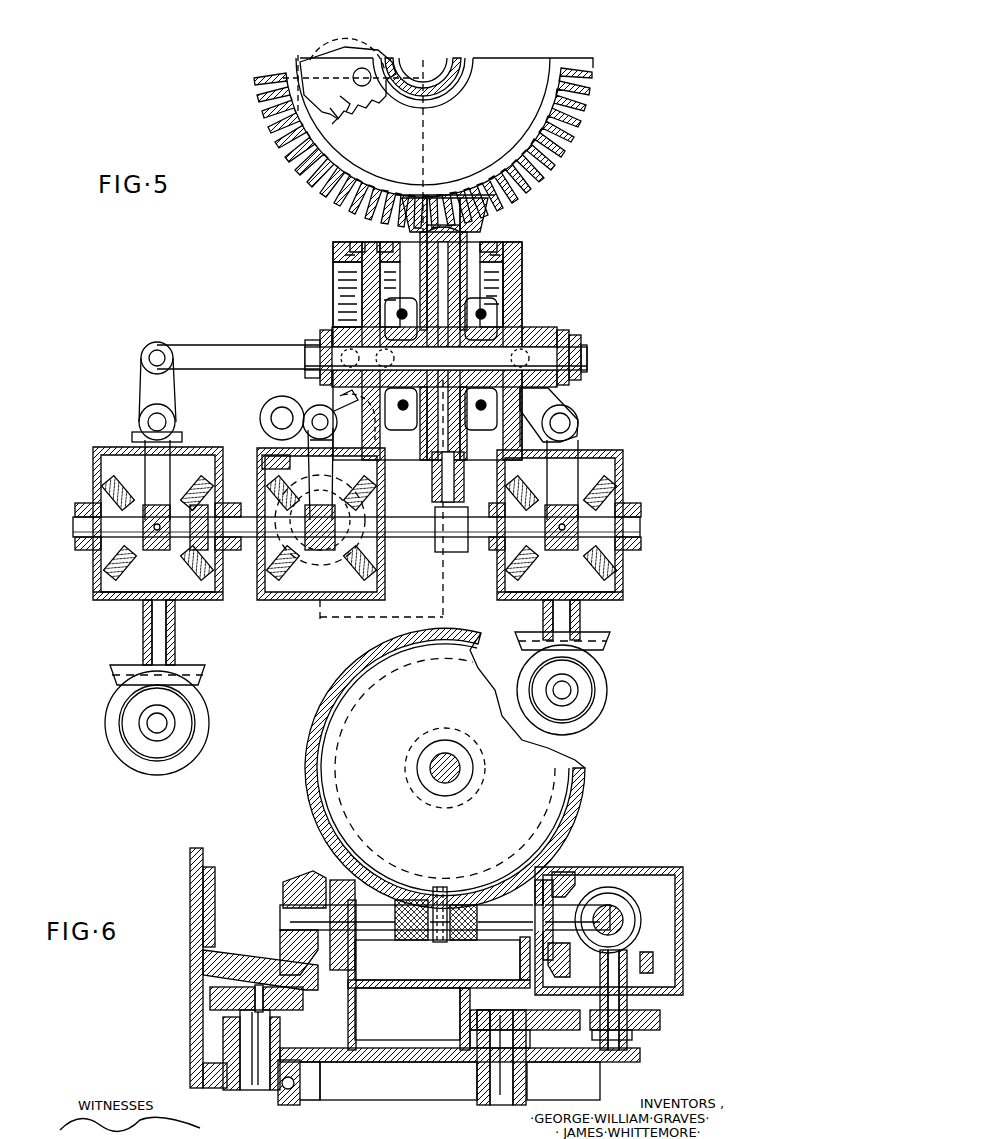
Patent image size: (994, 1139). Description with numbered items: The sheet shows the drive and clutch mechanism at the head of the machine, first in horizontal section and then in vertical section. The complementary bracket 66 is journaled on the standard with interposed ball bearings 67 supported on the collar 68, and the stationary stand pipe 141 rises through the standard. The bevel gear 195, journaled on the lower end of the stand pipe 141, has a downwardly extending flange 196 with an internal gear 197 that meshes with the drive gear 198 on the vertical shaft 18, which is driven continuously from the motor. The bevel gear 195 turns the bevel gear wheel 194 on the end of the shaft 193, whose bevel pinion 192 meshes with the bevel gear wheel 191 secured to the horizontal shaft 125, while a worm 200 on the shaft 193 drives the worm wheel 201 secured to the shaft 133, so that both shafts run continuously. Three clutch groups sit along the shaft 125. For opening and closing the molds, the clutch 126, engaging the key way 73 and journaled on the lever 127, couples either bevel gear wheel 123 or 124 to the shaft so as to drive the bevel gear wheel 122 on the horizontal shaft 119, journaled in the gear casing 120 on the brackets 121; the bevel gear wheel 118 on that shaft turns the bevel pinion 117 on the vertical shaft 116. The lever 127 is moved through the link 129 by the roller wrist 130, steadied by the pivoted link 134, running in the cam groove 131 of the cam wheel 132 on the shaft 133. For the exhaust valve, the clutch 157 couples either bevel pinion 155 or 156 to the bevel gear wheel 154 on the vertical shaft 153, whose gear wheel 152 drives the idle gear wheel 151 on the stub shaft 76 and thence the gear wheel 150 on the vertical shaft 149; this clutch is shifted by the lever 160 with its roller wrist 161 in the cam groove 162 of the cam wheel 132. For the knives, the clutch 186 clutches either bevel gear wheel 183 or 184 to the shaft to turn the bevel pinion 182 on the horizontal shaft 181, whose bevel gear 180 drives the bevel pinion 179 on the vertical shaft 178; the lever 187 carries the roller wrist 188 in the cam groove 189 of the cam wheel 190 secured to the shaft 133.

In FIG. 5, the vertical shaft 18 is at (353, 78).
In FIG. 6, the vertical shaft 18 is at (235, 1030).
In FIG. 6, the complementary bracket 66 is at (460, 1074).
In FIG. 6, the ball bearings 67 is at (318, 1097).
In FIG. 6, the collar 68 is at (282, 1097).
In FIG. 5, the key way 73 is at (130, 488).
In FIG. 6, the key way 73 is at (625, 908).
In FIG. 6, the stub shaft 76 is at (553, 1020).
In FIG. 5, the vertical shaft 116 is at (153, 720).
In FIG. 5, the bevel pinion 117 is at (200, 715).
In FIG. 5, the bevel gear wheel 118 is at (183, 672).
In FIG. 5, the horizontal shaft 119 is at (157, 620).
In FIG. 5, the gear casing 120 is at (100, 594).
In FIG. 6, the gear casing 120 is at (685, 897).
In FIG. 6, the brackets 121 is at (357, 1016).
In FIG. 5, the bevel gear wheel 122 is at (115, 567).
In FIG. 5, the bevel gear wheel 123 is at (95, 472).
In FIG. 5, the bevel gear wheel 124 is at (197, 490).
In FIG. 5, the shaft 125 is at (80, 525).
In FIG. 6, the shaft 125 is at (612, 918).
In FIG. 5, the clutch 126 is at (157, 517).
In FIG. 5, the lever 127 is at (150, 378).
In FIG. 5, the link 129 is at (227, 352).
In FIG. 5, the roller wrist 130 is at (355, 327).
In FIG. 6, the roller wrist 130 is at (445, 885).
In FIG. 5, the cam groove 131 is at (390, 243).
In FIG. 5, the cam wheel 132 is at (372, 295).
In FIG. 5, the shaft 133 is at (447, 357).
In FIG. 6, the shaft 133 is at (447, 771).
In FIG. 5, the pivoted link 134 is at (350, 340).
In FIG. 5, the stand pipe 141 is at (465, 88).
In FIG. 6, the stand pipe 141 is at (200, 882).
In FIG. 6, the vertical shaft 149 is at (495, 1080).
In FIG. 5, the gear wheel 150 is at (268, 408).
In FIG. 6, the gear wheel 150 is at (485, 1023).
In FIG. 5, the idle gear wheel 151 is at (290, 448).
In FIG. 6, the idle gear wheel 151 is at (615, 1047).
In FIG. 6, the gear wheel 152 is at (655, 1020).
In FIG. 6, the vertical shaft 153 is at (585, 1031).
In FIG. 5, the bevel gear wheel 154 is at (328, 560).
In FIG. 6, the bevel gear wheel 154 is at (647, 962).
In FIG. 5, the bevel pinion 155 is at (305, 557).
In FIG. 5, the bevel pinion 156 is at (352, 565).
In FIG. 5, the clutch 157 is at (320, 545).
In FIG. 5, the lever 160 is at (327, 402).
In FIG. 6, the lever 160 is at (570, 890).
In FIG. 5, the roller wrist 161 is at (318, 345).
In FIG. 5, the cam groove 162 is at (357, 243).
In FIG. 5, the vertical shaft 178 is at (565, 690).
In FIG. 5, the bevel pinion 179 is at (605, 682).
In FIG. 5, the bevel gear 180 is at (592, 642).
In FIG. 5, the horizontal shaft 181 is at (580, 590).
In FIG. 5, the bevel pinion 182 is at (600, 572).
In FIG. 5, the bevel gear wheel 183 is at (627, 480).
In FIG. 5, the bevel gear wheel 184 is at (560, 517).
In FIG. 5, the clutch 186 is at (600, 498).
In FIG. 5, the lever 187 is at (548, 403).
In FIG. 5, the roller wrist 188 is at (547, 327).
In FIG. 5, the cam groove 189 is at (497, 245).
In FIG. 5, the cam wheel 190 is at (513, 272).
In FIG. 5, the bevel gear wheel 191 is at (398, 557).
In FIG. 5, the bevel pinion 192 is at (477, 552).
In FIG. 6, the bevel pinion 192 is at (545, 880).
In FIG. 5, the shaft 193 is at (585, 425).
In FIG. 6, the shaft 193 is at (370, 915).
In FIG. 5, the bevel gear wheel 194 is at (467, 203).
In FIG. 6, the bevel gear wheel 194 is at (300, 880).
In FIG. 5, the bevel gear 195 is at (578, 110).
In FIG. 6, the bevel gear 195 is at (280, 962).
In FIG. 5, the flange 196 is at (350, 138).
In FIG. 6, the flange 196 is at (303, 997).
In FIG. 5, the internal gear 197 is at (355, 124).
In FIG. 6, the internal gear 197 is at (290, 1005).
In FIG. 5, the drive gear 198 is at (350, 62).
In FIG. 6, the drive gear 198 is at (223, 995).
In FIG. 6, the worm 200 is at (412, 915).
In FIG. 5, the worm wheel 201 is at (443, 270).
In FIG. 6, the worm wheel 201 is at (550, 789).